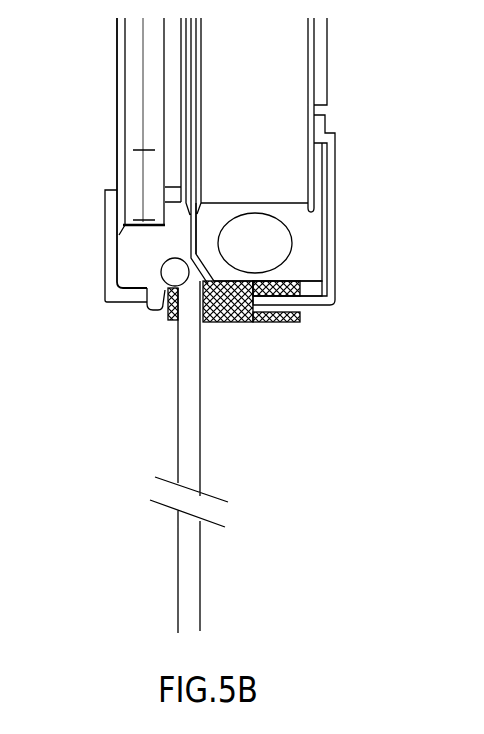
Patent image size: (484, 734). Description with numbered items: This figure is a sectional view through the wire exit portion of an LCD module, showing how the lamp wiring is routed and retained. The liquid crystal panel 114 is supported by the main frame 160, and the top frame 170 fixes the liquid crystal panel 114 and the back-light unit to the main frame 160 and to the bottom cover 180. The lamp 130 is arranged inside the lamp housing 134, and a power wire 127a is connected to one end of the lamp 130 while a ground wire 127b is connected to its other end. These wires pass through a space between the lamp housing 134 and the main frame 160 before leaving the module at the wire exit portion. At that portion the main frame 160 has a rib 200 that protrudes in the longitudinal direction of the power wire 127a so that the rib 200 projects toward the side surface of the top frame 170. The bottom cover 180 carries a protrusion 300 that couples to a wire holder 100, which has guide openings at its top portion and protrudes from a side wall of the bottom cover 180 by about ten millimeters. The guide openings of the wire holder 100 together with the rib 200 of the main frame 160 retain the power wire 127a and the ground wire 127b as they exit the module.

The wire holder 100 is at (226, 322).
The liquid crystal panel 114 is at (125, 158).
The power wire 127a is at (202, 448).
The ground wire 127b is at (147, 297).
The lamp 130 is at (283, 250).
The lamp housing 134 is at (327, 209).
The main frame 160 is at (122, 237).
The top frame 170 is at (110, 268).
The bottom cover 180 is at (328, 253).
The rib 200 is at (170, 282).
The protrusion 300 is at (309, 302).